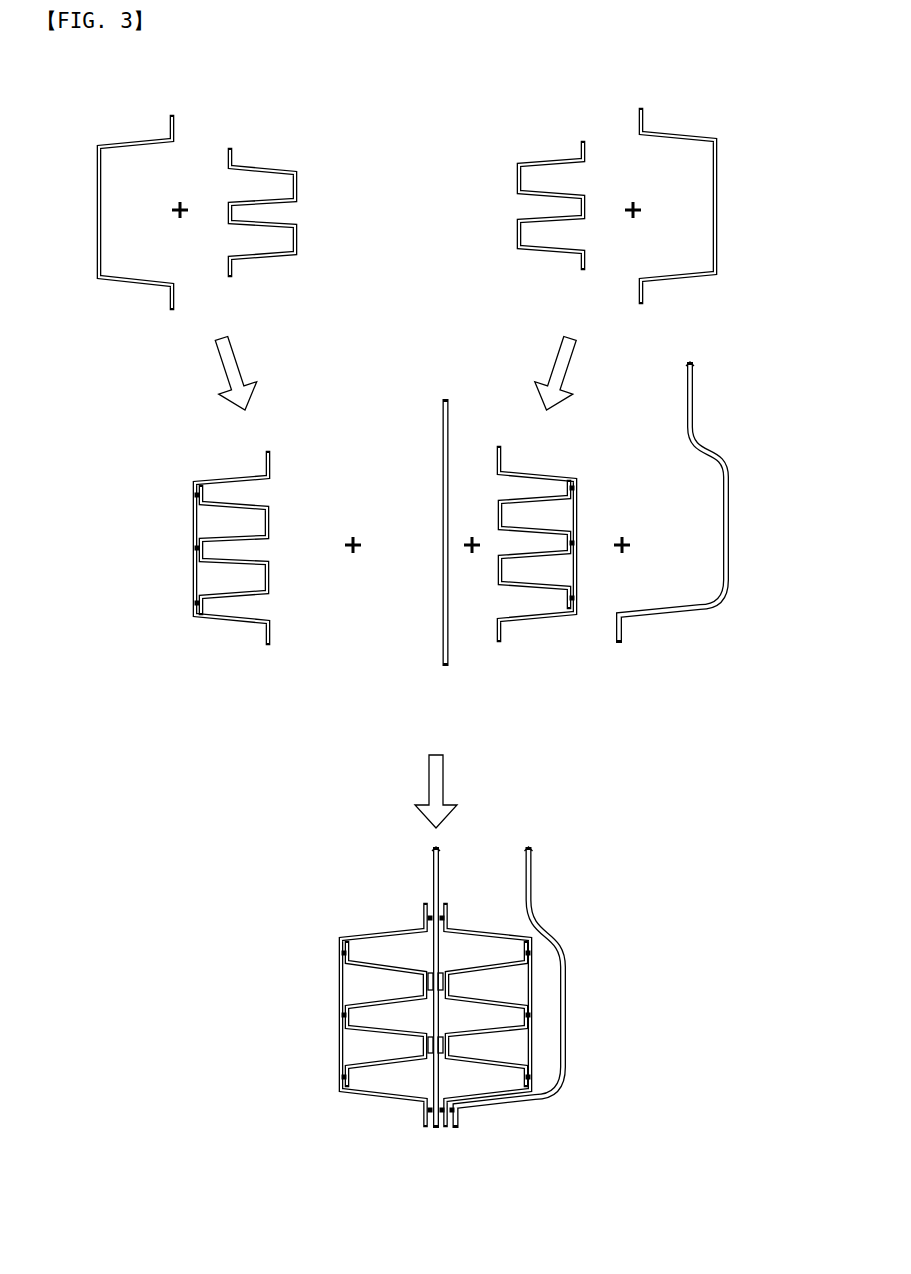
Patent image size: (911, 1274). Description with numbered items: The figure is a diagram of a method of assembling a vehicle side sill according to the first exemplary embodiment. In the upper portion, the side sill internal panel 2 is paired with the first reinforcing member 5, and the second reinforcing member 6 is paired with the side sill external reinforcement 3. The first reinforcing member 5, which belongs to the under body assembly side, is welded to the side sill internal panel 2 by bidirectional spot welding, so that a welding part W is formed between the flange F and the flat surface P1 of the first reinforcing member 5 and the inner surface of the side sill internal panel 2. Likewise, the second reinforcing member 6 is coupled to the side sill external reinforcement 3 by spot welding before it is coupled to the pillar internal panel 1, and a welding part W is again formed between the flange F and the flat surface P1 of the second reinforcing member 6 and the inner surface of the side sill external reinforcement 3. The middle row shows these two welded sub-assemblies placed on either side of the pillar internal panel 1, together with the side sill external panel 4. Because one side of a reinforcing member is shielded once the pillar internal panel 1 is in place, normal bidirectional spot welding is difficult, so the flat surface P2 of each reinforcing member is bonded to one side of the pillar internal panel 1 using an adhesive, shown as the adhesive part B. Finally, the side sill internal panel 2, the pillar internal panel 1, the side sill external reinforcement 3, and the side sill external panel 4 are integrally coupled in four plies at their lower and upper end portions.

The pillar internal panel 1 is at (443, 430).
The side sill internal panel 2 is at (98, 207).
The side sill external reinforcement 3 is at (717, 197).
The side sill external panel 4 is at (729, 536).
The first reinforcing member 5 is at (254, 165).
The second reinforcing member 6 is at (542, 163).
The flat surface P1 is at (212, 558).
The flat surface P2 is at (270, 518).
The flange F is at (208, 603).
The welding part W is at (572, 482).
The adhesive part B is at (427, 980).